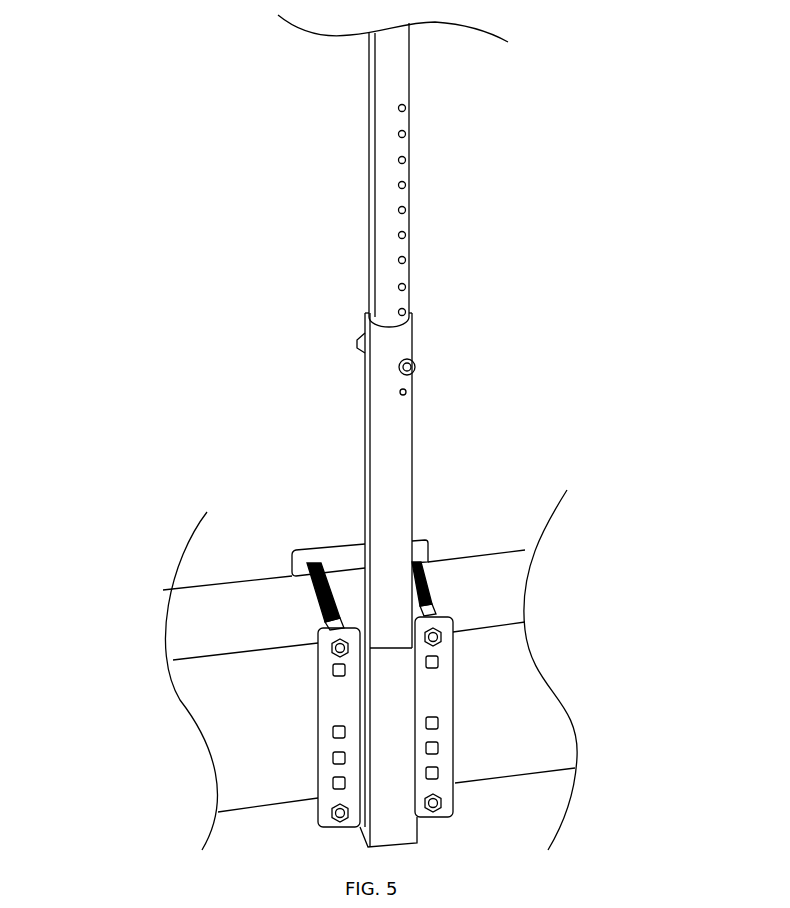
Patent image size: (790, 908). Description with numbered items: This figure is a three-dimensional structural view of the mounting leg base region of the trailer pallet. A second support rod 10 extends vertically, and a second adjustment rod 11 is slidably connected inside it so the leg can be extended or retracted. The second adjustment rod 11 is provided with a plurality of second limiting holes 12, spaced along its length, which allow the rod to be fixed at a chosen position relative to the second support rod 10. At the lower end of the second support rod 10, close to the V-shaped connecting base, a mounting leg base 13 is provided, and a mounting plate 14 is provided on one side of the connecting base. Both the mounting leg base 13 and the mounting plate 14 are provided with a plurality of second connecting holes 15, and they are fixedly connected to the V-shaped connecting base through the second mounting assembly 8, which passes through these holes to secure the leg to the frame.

The second mounting assembly 8 is at (317, 595).
The second support rod 10 is at (397, 483).
The second adjustment rod 11 is at (391, 80).
The second limiting holes 12 is at (407, 262).
The mounting leg base 13 is at (428, 685).
The mounting plate 14 is at (420, 552).
The second connecting holes 15 is at (340, 757).